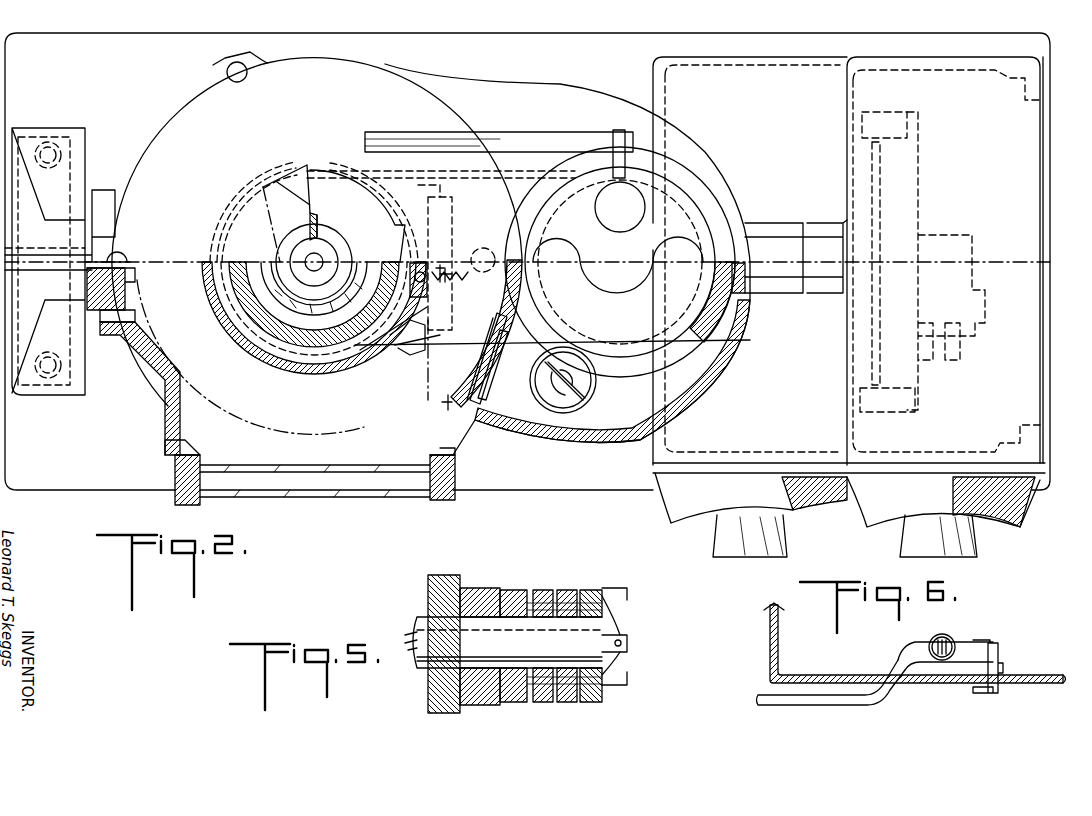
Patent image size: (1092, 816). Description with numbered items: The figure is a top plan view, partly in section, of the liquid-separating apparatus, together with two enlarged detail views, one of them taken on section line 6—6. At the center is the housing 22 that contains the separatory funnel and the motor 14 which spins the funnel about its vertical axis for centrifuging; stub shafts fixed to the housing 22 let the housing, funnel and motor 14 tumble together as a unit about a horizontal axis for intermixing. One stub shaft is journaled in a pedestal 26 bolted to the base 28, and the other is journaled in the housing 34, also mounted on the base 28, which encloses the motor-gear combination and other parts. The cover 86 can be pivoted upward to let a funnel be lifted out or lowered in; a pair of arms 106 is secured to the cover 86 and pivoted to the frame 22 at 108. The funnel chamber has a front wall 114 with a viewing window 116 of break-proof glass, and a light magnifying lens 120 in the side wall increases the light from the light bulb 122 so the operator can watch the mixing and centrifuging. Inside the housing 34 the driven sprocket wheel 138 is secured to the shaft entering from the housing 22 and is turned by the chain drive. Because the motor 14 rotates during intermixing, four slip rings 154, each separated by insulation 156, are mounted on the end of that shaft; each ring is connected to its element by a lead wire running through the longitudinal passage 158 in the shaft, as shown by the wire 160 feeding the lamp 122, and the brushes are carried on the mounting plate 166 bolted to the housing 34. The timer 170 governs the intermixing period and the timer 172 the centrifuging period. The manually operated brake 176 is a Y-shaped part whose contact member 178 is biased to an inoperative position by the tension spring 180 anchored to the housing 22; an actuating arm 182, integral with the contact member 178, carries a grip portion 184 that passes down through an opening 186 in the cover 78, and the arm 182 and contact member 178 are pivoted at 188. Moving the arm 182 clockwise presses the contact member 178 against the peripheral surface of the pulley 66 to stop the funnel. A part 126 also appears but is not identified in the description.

In FIG. 2, the motor 14 is at (673, 337).
In FIG. 2, the housing 22 is at (572, 84).
In FIG. 2, the pedestal 26 is at (45, 125).
In FIG. 2, the base 28 is at (888, 42).
In FIG. 2, the housing 34 is at (985, 62).
In FIG. 2, the pulley 66 is at (333, 357).
In FIG. 6, the cover 78 is at (770, 638).
In FIG. 2, the cover 86 is at (332, 63).
In FIG. 2, the arms 106 is at (527, 132).
In FIG. 2, the pivot 108 is at (606, 133).
In FIG. 2, the front wall 114 is at (455, 500).
In FIG. 2, the viewing window 116 is at (330, 490).
In FIG. 2, the light magnifying lens 120 is at (497, 380).
In FIG. 2, the light bulb 122 is at (597, 388).
In FIG. 2, the spring housing 126 is at (455, 207).
In FIG. 2, the driven sprocket wheel 138 is at (858, 145).
In FIG. 5, the driven sprocket wheel 138 is at (430, 575).
In FIG. 5, the slip rings 154 is at (595, 590).
In FIG. 5, the insulation 156 is at (505, 590).
In FIG. 5, the longitudinally extending passage 158 is at (545, 638).
In FIG. 5, the wire 160 is at (625, 615).
In FIG. 2, the mounting plate 166 is at (918, 160).
In FIG. 2, the timer 170 is at (697, 520).
In FIG. 2, the timer 172 is at (1010, 525).
In FIG. 2, the manually operated brake 176 is at (417, 372).
In FIG. 2, the contact member 178 is at (395, 340).
In FIG. 2, the tension spring 180 is at (463, 281).
In FIG. 6, the tension spring 180 is at (953, 640).
In FIG. 6, the actuating arm 182 is at (910, 646).
In FIG. 2, the grip portion 184 is at (425, 392).
In FIG. 6, the grip portion 184 is at (806, 705).
In FIG. 6, the opening 186 is at (858, 674).
In FIG. 2, the pivot 188 is at (375, 355).
In FIG. 6, the pivot 188 is at (998, 643).
In FIG. 2, the section line 6— 6 is at (451, 339).